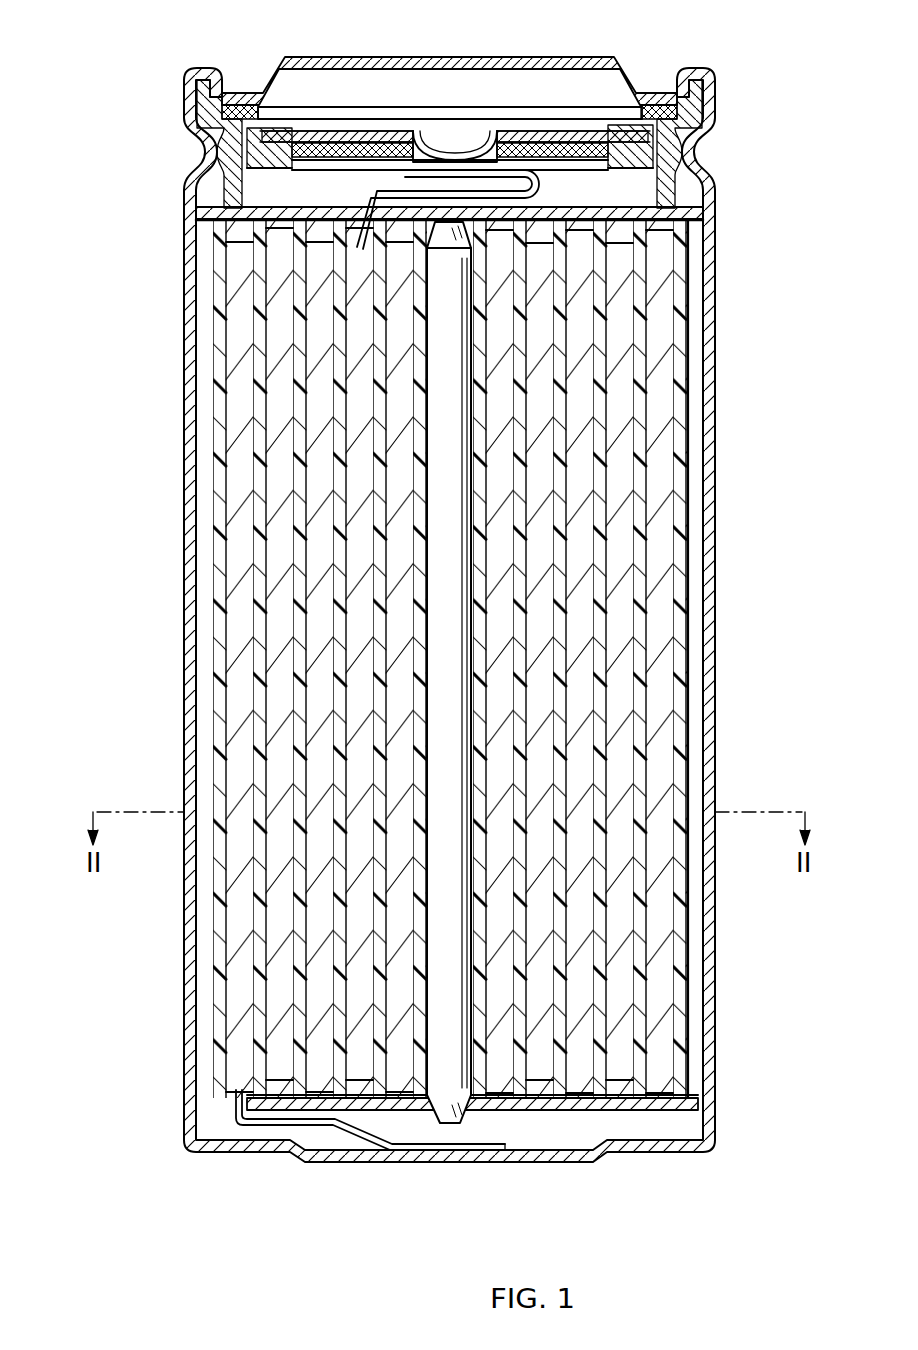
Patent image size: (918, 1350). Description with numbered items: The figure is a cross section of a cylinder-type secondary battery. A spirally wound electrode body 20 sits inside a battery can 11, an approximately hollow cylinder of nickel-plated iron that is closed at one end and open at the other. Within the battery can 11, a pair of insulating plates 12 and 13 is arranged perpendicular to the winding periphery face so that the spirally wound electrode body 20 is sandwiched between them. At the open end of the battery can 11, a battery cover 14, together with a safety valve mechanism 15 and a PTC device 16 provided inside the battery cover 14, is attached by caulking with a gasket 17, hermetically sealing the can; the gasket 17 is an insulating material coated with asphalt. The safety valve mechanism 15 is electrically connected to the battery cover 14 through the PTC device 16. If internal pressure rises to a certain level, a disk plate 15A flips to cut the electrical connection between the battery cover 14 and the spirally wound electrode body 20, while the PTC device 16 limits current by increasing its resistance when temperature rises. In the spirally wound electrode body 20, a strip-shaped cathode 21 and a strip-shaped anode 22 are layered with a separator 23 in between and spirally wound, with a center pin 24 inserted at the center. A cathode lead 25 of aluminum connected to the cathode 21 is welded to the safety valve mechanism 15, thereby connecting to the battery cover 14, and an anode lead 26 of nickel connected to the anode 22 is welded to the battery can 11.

The battery can 11 is at (709, 276).
The insulating plate 12 is at (700, 213).
The insulating plate 13 is at (700, 1104).
The battery cover 14 is at (416, 56).
The safety valve mechanism 15 is at (475, 88).
The disk plate 15A is at (573, 128).
The PTC device 16 is at (703, 113).
The gasket 17 is at (714, 175).
The spirally wound electrode body 20 is at (494, 671).
The cathode 21 is at (622, 492).
The anode 22 is at (660, 552).
The separator 23 is at (638, 626).
The center pin 24 is at (445, 673).
The cathode lead 25 is at (418, 138).
The anode lead 26 is at (343, 1128).